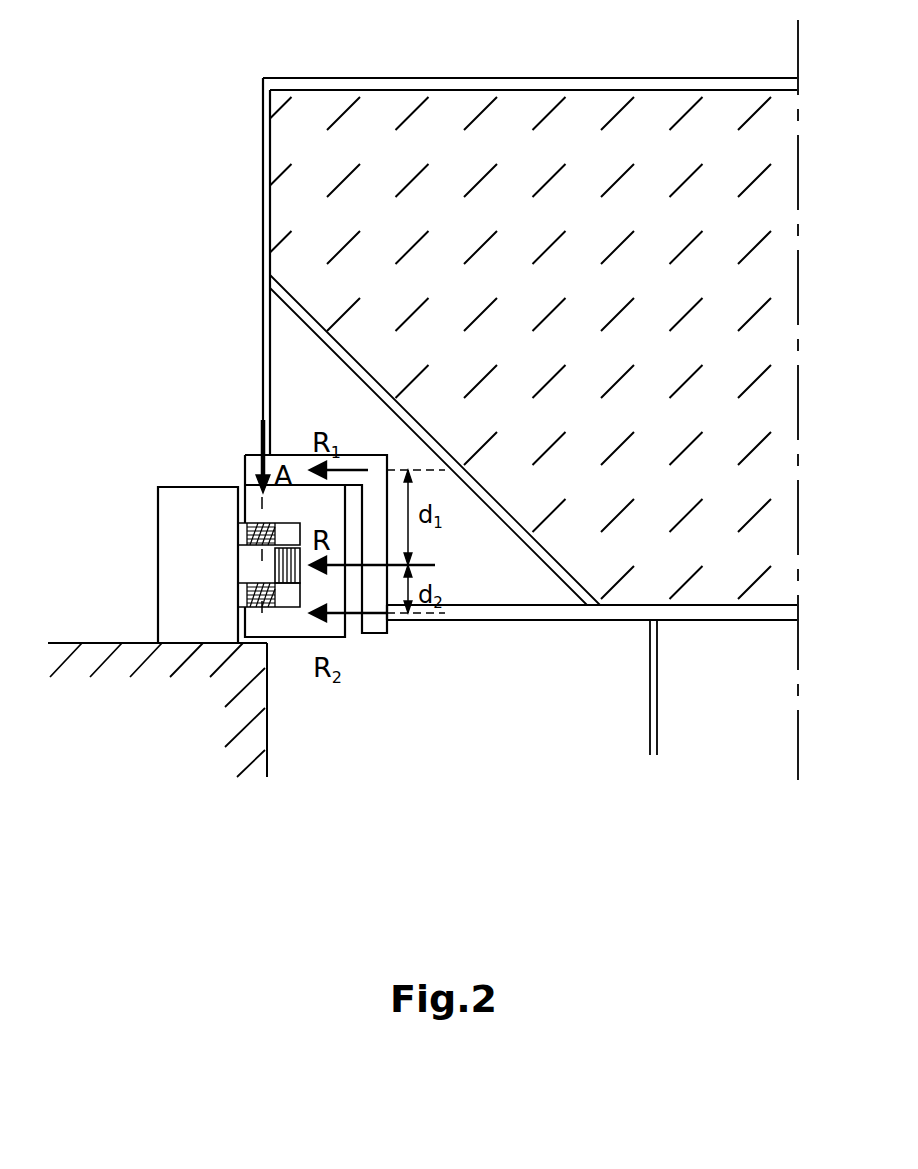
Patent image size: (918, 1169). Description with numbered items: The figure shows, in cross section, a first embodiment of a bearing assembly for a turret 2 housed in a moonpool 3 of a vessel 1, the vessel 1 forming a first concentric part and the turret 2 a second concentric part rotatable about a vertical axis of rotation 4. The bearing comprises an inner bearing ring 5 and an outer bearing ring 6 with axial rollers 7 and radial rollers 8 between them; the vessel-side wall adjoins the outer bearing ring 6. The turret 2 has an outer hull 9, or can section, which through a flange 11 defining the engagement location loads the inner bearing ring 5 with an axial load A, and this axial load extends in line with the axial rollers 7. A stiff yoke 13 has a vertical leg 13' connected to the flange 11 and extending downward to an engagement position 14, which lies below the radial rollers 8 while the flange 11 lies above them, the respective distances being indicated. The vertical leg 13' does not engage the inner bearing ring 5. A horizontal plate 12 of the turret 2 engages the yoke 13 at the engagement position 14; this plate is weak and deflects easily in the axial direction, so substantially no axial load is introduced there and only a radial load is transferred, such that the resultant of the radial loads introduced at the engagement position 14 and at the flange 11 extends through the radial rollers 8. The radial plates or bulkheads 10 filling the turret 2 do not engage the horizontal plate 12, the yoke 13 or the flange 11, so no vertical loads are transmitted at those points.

The vessel 1 is at (157, 710).
The turret 2 is at (430, 76).
The moonpool 3 is at (267, 738).
The vertical axis of rotation 4 is at (797, 48).
The inner bearing ring 5 is at (283, 623).
The outer bearing ring 6 is at (172, 497).
The axial rollers 7 is at (247, 535).
The radial rollers 8 is at (283, 563).
The outer hull 9 is at (263, 148).
The radial plates or bulkheads 10 is at (563, 120).
The flange 11 is at (245, 472).
The horizontal plate 12 is at (542, 621).
The yoke 13 is at (367, 658).
The vertical leg 13' is at (422, 542).
The engagement position 14 is at (388, 619).